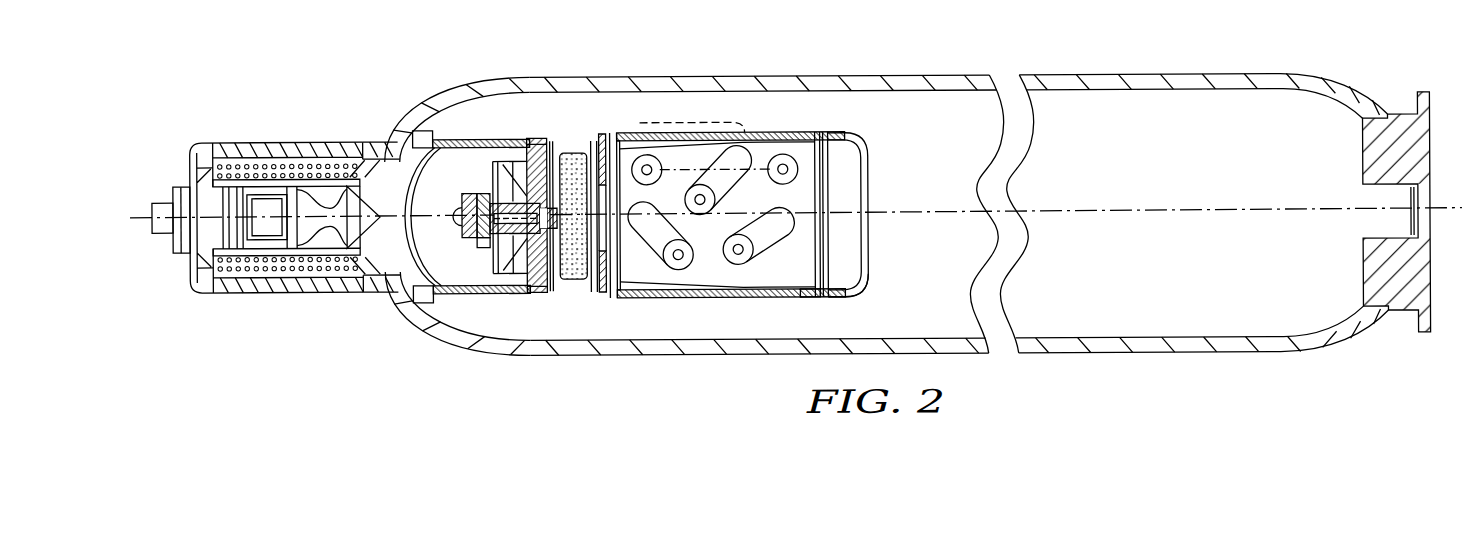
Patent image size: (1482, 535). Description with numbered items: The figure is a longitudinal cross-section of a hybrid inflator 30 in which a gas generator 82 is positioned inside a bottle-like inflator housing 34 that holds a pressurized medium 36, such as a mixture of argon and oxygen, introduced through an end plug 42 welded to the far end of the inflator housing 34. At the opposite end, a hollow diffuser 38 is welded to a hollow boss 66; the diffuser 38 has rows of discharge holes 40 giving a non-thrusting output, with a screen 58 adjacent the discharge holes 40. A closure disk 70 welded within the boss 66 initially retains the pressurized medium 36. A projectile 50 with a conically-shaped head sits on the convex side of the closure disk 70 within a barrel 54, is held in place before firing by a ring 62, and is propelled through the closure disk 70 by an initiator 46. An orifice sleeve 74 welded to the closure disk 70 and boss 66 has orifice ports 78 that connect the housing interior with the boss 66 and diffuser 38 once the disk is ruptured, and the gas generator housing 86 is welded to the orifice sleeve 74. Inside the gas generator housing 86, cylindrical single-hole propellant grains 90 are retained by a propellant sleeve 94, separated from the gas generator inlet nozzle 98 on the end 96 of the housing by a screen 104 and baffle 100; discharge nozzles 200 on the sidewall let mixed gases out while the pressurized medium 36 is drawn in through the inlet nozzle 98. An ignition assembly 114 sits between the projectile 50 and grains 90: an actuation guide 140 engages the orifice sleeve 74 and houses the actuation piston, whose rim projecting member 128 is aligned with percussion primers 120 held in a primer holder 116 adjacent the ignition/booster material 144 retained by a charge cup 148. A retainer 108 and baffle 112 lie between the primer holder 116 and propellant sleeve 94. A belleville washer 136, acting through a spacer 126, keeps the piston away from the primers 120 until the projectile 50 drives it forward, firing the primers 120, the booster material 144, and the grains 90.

The inflator 30 is at (1165, 355).
The inflator housing 34 is at (1138, 76).
The pressurized medium 36 is at (1159, 284).
The diffuser 38 is at (213, 140).
The discharge holes 40 is at (297, 160).
The end plug 42 is at (1432, 138).
The initiator 46 is at (158, 200).
The projectile 50 is at (317, 240).
The barrel 54 is at (237, 262).
The screen 58 is at (210, 290).
The ring 62 is at (253, 177).
The boss 66 is at (363, 140).
The closure disk 70 is at (407, 176).
The orifice sleeve 74 is at (462, 138).
The orifice ports 78 is at (458, 212).
The gas generator 82 is at (780, 131).
The gas generator housing 86 is at (856, 290).
The propellant grains 90 is at (764, 250).
The propellant sleeve 94 is at (790, 146).
The end 96 is at (858, 137).
The gas generator inlet nozzle 98 is at (869, 253).
The baffle 100 is at (830, 297).
The screen 104 is at (808, 297).
The retainer 108 is at (603, 138).
The baffle 112 is at (614, 131).
The ignition assembly 114 is at (462, 268).
The primer holder 116 is at (553, 148).
The percussion primer 120 is at (554, 293).
The spacer 126 is at (478, 248).
The rim projecting member 128 is at (546, 292).
The belleville washer 136 is at (492, 293).
The actuation guide 140 is at (477, 204).
The ignition/booster material 144 is at (568, 150).
The charge cup 148 is at (626, 297).
The discharge nozzles 200 is at (642, 121).